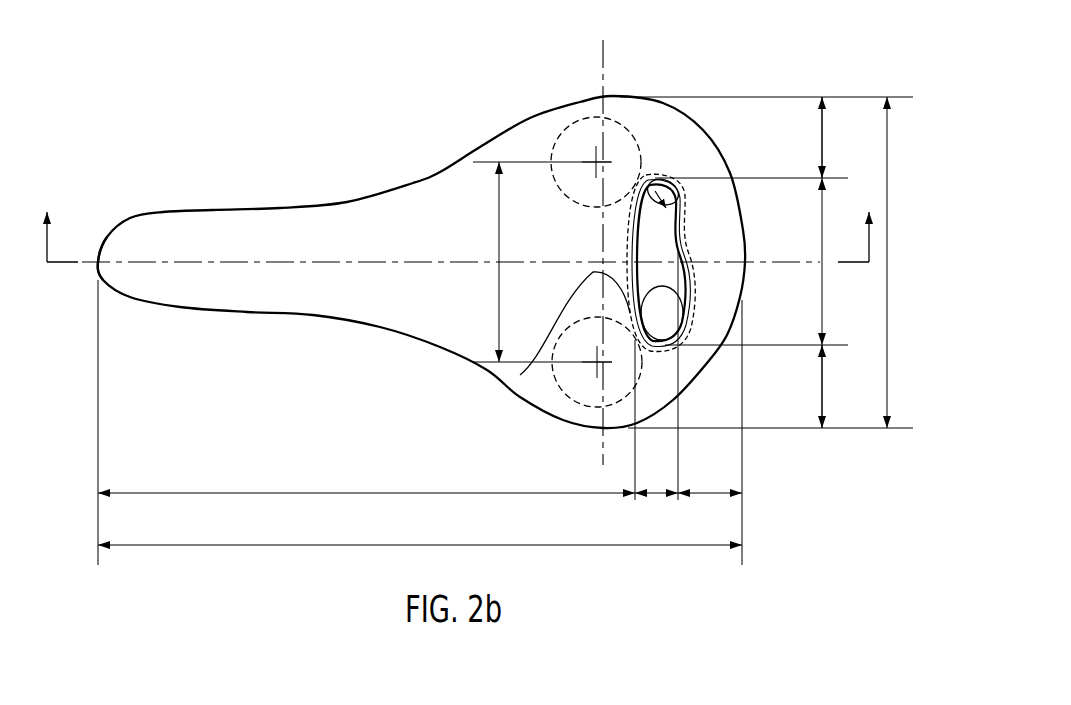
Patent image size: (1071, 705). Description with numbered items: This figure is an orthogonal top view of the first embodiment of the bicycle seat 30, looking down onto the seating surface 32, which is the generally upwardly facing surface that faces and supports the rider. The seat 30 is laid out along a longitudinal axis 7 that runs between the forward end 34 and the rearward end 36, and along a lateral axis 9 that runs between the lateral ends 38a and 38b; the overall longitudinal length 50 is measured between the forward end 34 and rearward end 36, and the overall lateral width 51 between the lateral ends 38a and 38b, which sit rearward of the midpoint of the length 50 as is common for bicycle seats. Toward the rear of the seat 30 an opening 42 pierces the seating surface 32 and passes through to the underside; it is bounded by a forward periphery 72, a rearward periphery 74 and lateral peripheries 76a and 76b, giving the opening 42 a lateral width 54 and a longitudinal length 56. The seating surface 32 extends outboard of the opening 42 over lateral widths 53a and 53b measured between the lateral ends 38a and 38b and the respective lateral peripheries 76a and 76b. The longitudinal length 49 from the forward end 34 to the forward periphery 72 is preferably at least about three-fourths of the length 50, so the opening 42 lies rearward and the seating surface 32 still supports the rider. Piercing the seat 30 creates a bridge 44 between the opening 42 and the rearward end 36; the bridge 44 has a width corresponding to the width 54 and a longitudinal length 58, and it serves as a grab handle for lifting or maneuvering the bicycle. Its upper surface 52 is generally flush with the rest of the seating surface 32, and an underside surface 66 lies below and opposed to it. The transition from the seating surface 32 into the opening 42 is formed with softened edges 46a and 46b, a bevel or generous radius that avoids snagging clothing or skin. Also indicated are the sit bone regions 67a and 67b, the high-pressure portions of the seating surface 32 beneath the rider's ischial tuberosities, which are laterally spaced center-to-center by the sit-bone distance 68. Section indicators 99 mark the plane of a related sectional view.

The longitudinal axis 7 is at (193, 262).
The lateral axis 9 is at (603, 47).
The seat 30 is at (205, 410).
The seating surface 32 is at (430, 212).
The forward end 34 is at (97, 268).
The rearward end 36 is at (742, 254).
The lateral end 38a is at (598, 97).
The lateral end 38b is at (598, 432).
The opening 42 is at (644, 182).
The bridge 44 is at (720, 268).
The softened edge 46a is at (520, 375).
The softened edge 46b is at (690, 298).
The longitudinal length 49 is at (333, 496).
The overall longitudinal length 50 is at (372, 547).
The overall lateral width 51 is at (888, 148).
The upper surface 52 is at (723, 228).
The lateral width 53a is at (823, 134).
The lateral width 53b is at (823, 390).
The lateral width 54 is at (823, 302).
The longitudinal length 56 is at (657, 495).
The longitudinal length 58 is at (707, 496).
The underside surface 66 is at (700, 318).
The sit bone region 67a is at (553, 143).
The sit bone region 67b is at (577, 403).
The sit-bone distance 68 is at (444, 330).
The forward periphery 72 is at (645, 254).
The rearward periphery 74 is at (625, 181).
The lateral periphery 76a is at (698, 204).
The lateral periphery 76b is at (643, 320).
The section line 99 is at (457, 221).